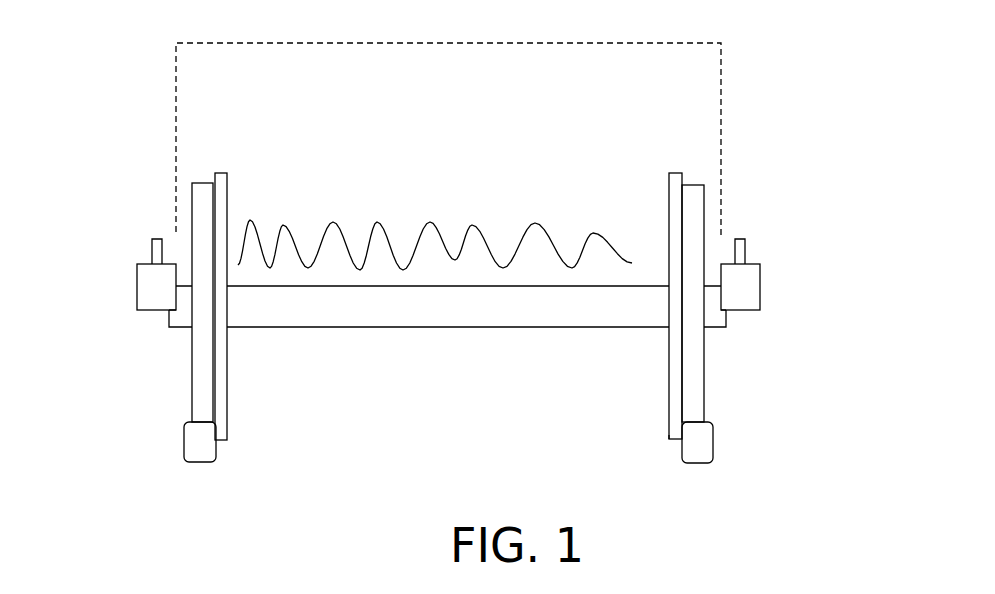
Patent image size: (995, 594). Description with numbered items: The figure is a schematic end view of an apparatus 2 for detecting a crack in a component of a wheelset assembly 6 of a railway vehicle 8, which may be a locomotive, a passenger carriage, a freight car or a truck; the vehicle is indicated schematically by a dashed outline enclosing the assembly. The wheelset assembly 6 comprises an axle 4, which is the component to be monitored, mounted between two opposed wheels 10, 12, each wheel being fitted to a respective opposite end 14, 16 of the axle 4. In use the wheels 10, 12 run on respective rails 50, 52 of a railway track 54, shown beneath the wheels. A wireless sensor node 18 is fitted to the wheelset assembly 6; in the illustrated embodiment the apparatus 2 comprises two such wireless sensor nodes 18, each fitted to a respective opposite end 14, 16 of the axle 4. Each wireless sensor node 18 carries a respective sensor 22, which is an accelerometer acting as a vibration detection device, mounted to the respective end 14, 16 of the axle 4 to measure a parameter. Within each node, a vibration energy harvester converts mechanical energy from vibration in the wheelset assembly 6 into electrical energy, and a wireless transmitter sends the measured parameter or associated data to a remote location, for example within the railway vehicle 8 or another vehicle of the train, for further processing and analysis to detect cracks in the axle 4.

The apparatus 2 is at (482, 223).
The axle 4 is at (482, 333).
The wheelset assembly 6 is at (236, 364).
The railway vehicle 8 is at (433, 36).
The wheel 10 is at (200, 178).
The wheel 12 is at (695, 178).
The end of the axle 14 is at (162, 338).
The end of the axle 16 is at (722, 345).
The wireless sensor node 18 is at (133, 284).
The sensor 22 is at (142, 258).
The rail 50 is at (205, 468).
The rail 52 is at (690, 468).
The railway track 54 is at (662, 450).